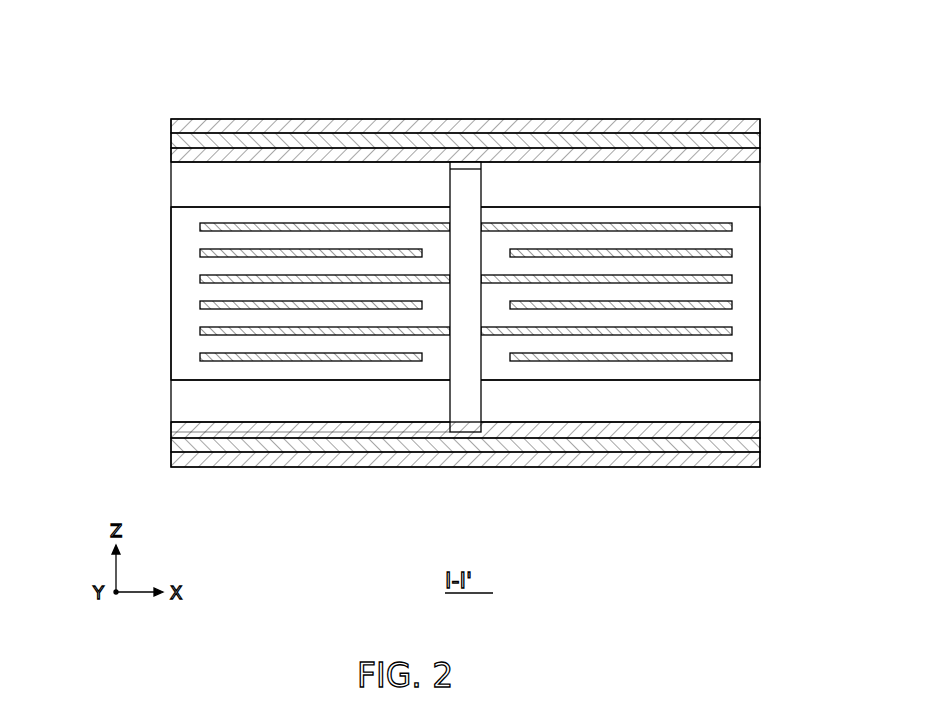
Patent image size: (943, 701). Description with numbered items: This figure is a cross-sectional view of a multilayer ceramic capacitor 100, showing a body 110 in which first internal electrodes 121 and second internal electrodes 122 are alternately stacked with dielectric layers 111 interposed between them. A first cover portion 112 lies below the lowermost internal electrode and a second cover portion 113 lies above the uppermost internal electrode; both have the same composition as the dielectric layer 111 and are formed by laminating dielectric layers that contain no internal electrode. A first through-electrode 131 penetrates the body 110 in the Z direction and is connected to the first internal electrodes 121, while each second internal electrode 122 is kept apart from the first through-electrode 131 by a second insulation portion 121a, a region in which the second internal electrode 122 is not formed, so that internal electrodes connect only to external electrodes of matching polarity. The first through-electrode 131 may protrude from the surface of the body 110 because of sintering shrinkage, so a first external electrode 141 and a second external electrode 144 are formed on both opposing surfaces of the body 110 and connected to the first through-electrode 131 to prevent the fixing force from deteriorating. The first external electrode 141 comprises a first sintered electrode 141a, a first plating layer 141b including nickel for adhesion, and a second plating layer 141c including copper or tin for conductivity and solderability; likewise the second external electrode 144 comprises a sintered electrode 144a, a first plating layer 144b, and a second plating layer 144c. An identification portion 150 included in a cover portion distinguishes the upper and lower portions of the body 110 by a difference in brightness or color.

The multilayer ceramic capacitor 100 is at (310, 45).
The body 110 is at (527, 428).
The dielectric layer 111 is at (730, 320).
The first cover portion 112 is at (760, 396).
The second cover portion 113 is at (760, 186).
The first internal electrode 121 is at (275, 369).
The second insulation portion 121a is at (437, 360).
The second internal electrode 122 is at (732, 360).
The first through-electrode 131 is at (467, 166).
The first external electrode 141 is at (398, 447).
The first sintered electrode 141a is at (171, 431).
The first plating layer 141b is at (171, 445).
The second plating layer 141c is at (171, 463).
The second external electrode 144 is at (398, 137).
The sintered electrode 144a is at (171, 161).
The first plating layer 144b is at (171, 141).
The second plating layer 144c is at (171, 121).
The identification portion 150 is at (290, 424).